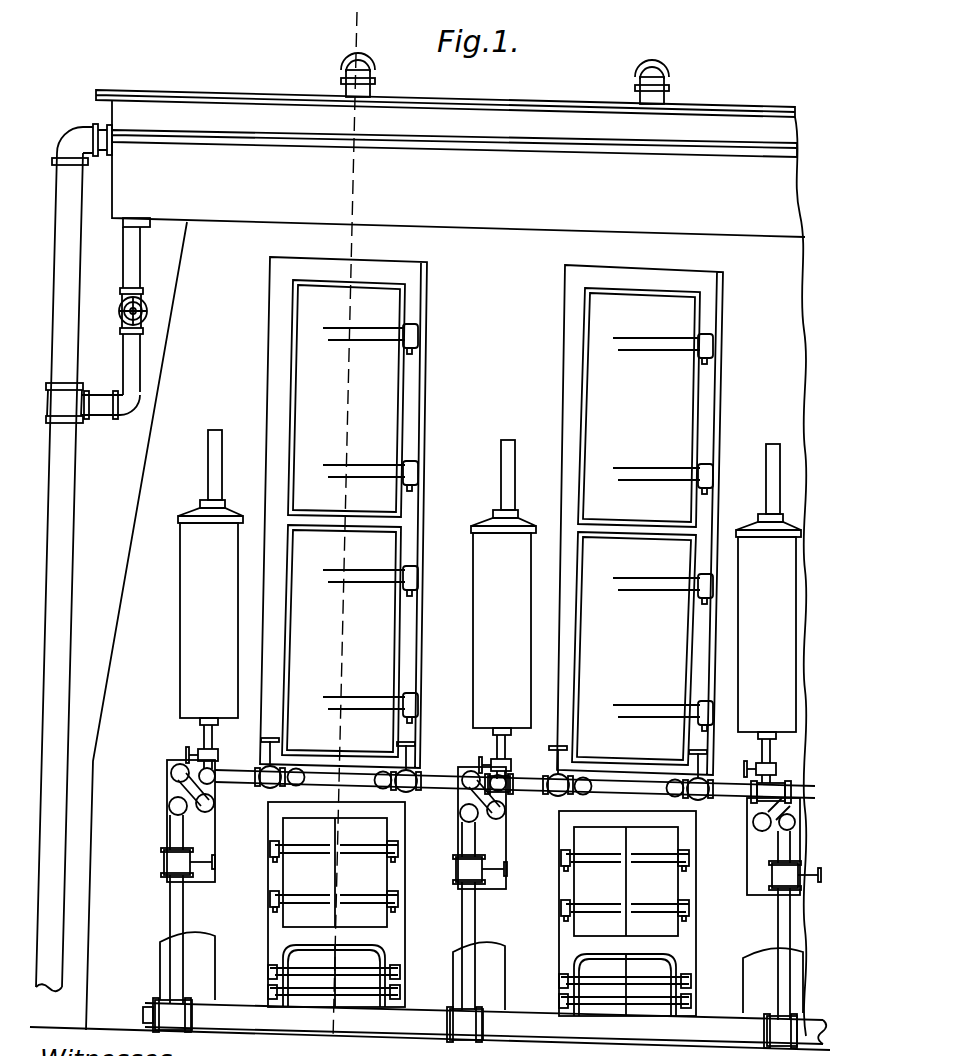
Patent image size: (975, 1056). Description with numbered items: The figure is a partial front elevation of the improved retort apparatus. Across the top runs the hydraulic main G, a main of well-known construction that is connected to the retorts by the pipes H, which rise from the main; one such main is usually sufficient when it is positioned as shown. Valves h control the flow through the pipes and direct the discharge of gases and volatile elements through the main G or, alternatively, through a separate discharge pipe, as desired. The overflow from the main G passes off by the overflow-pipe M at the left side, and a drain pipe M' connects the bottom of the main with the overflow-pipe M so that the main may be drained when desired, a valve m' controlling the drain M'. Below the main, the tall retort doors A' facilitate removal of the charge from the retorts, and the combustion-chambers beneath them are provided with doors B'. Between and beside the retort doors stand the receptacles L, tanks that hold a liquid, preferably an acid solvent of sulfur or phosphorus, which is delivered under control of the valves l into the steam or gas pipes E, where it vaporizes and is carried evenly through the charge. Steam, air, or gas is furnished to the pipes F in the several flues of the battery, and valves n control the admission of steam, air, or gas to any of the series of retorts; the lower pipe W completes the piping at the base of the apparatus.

The pipes H is at (636, 80).
The hydraulic main G is at (454, 140).
The valve h is at (346, 520).
The overflow-pipe M is at (88, 557).
The drain pipe M' is at (150, 311).
The valve m' is at (147, 311).
The doors A' is at (491, 516).
The receptacles L is at (489, 606).
The valves l is at (783, 765).
The steam or gas pipes E is at (813, 810).
The pipes F is at (483, 827).
The valves n is at (810, 896).
The doors B' is at (482, 909).
The bottom pipe W is at (380, 1022).